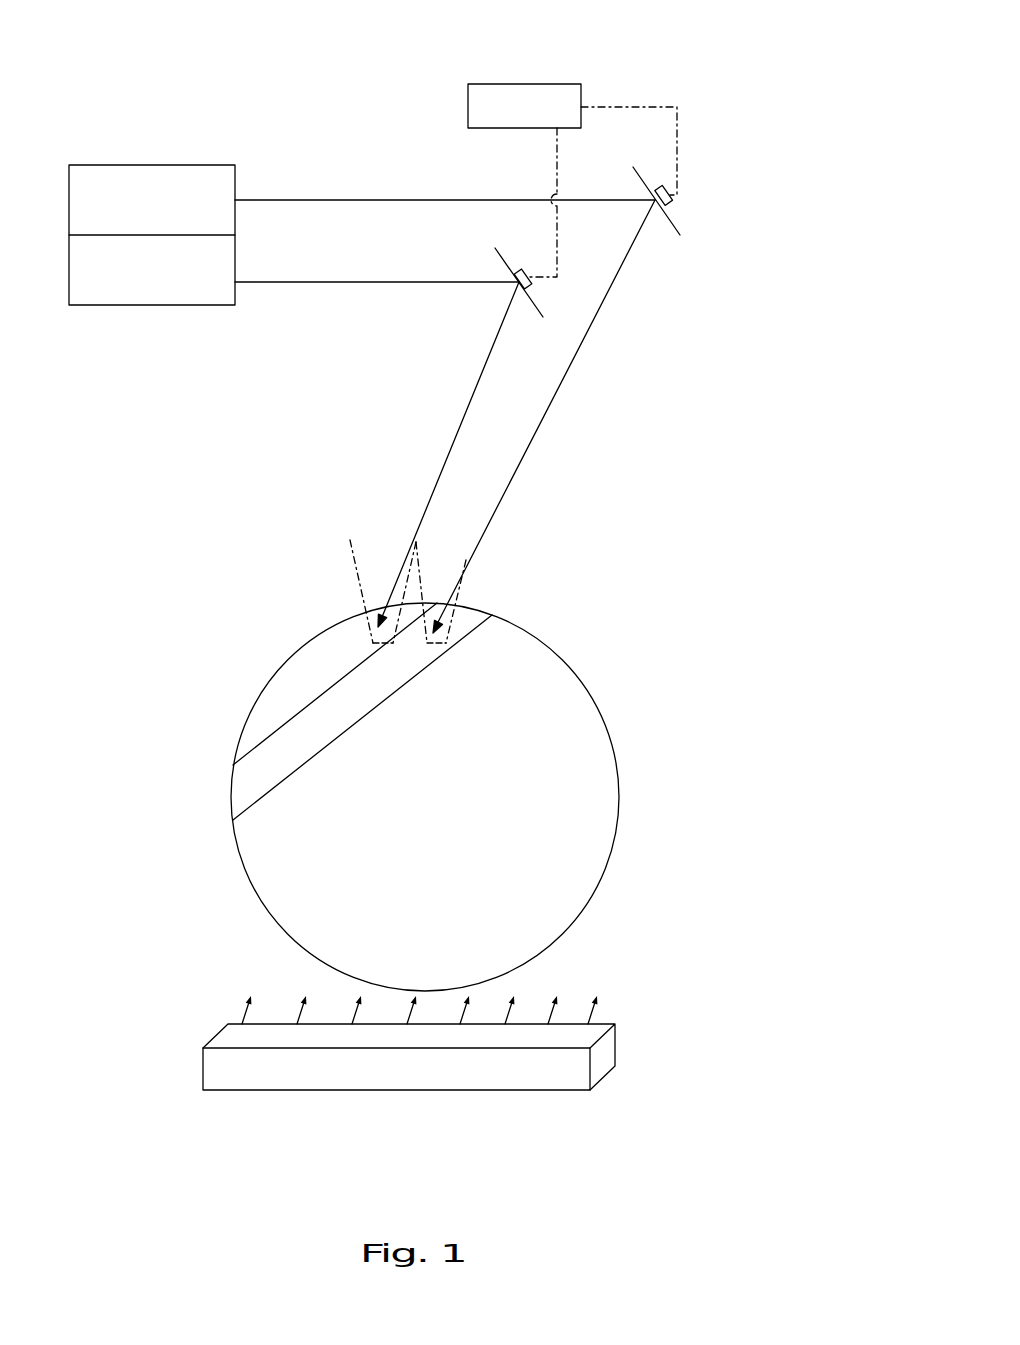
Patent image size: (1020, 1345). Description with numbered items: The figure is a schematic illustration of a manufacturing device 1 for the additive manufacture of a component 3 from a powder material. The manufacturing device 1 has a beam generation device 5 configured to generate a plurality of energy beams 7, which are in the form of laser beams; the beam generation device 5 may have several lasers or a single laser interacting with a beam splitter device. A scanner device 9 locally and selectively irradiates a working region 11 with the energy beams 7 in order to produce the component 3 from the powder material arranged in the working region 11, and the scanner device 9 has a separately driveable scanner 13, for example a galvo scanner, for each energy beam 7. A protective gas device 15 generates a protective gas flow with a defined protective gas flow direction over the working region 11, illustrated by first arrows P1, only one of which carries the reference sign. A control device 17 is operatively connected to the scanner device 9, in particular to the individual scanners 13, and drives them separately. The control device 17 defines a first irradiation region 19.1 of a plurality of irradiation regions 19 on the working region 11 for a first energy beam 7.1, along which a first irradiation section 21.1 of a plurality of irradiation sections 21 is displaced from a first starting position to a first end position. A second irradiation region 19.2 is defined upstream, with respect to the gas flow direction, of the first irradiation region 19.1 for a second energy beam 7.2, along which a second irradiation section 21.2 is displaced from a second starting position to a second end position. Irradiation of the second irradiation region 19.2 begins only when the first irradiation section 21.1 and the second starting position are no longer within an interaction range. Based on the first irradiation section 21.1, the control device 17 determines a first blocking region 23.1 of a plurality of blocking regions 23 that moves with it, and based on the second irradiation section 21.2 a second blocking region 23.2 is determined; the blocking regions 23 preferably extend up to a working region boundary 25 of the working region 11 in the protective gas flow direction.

The manufacturing device 1 is at (190, 92).
The component 3 is at (450, 797).
The beam generation device 5 is at (142, 160).
The energy beams 7 is at (457, 416).
The first energy beam 7.1 is at (477, 388).
The second energy beam 7.2 is at (577, 360).
The scanner device 9 is at (649, 212).
The working region 11 is at (469, 797).
The scanner 13 is at (680, 232).
The protective gas device 15 is at (612, 1047).
The control device 17 is at (528, 83).
The irradiation regions 19 is at (288, 717).
The first irradiation region 19.1 is at (330, 670).
The second irradiation region 19.2 is at (247, 787).
The irradiation sections 21 is at (427, 589).
The first irradiation section 21.1 is at (370, 625).
The second irradiation section 21.2 is at (447, 633).
The blocking regions 23 is at (470, 551).
The first blocking region 23.1 is at (350, 540).
The second blocking region 23.2 is at (463, 583).
The working region boundary 25 is at (618, 798).
The first arrows P1 is at (599, 1005).